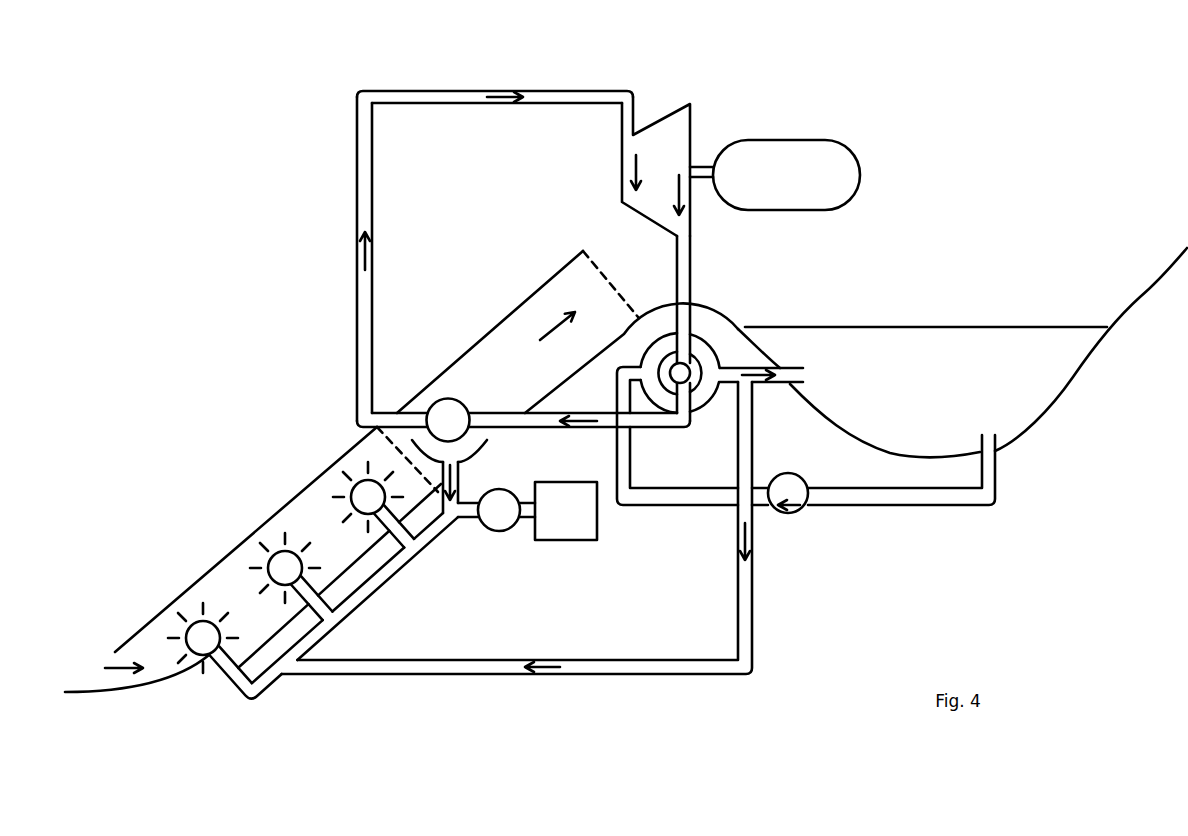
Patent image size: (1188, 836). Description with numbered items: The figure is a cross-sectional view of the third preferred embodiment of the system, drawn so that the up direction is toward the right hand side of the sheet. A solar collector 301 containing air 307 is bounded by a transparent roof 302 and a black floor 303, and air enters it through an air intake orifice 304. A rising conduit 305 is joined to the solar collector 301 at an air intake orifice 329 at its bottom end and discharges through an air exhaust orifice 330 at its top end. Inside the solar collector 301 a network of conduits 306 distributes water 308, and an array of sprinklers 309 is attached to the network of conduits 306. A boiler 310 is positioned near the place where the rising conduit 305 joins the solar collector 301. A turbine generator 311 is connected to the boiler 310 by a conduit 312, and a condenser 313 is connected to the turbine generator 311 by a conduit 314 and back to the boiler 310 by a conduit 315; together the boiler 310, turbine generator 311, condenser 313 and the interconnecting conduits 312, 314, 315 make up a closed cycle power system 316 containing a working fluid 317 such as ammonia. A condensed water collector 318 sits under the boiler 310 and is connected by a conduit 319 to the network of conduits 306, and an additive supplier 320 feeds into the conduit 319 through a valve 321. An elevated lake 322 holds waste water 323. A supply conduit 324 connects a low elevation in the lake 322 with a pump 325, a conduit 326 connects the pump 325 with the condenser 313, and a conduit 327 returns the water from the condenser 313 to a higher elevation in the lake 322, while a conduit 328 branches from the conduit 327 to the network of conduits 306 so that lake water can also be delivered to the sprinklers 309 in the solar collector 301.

The solar collector 301 is at (318, 480).
The transparent roof 302 is at (280, 510).
The black floor 303 is at (268, 643).
The air intake orifice 304 is at (112, 663).
The rising conduit 305 is at (508, 316).
The network of conduits 306 is at (373, 593).
The air 307 is at (158, 657).
The water 308 is at (428, 537).
The array of sprinklers 309 is at (195, 622).
The boiler 310 is at (442, 400).
The turbine generator 311 is at (695, 142).
The conduit 312 is at (373, 282).
The condenser 313 is at (695, 358).
The conduit 314 is at (693, 265).
The conduit 315 is at (668, 432).
The closed cycle power system 316 is at (445, 91).
The working fluid 317 is at (436, 414).
The condensed water collector 318 is at (460, 468).
The conduit 319 is at (458, 492).
The additive supplier 320 is at (571, 540).
The valve 321 is at (499, 532).
The elevated lake 322 is at (1032, 327).
The waste water 323 is at (962, 352).
The supply conduit 324 is at (915, 505).
The pump 325 is at (784, 516).
The conduit 326 is at (683, 510).
The conduit 327 is at (742, 368).
The conduit 328 is at (615, 677).
The air intake orifice 329 is at (398, 456).
The air exhaust orifice 330 is at (608, 282).